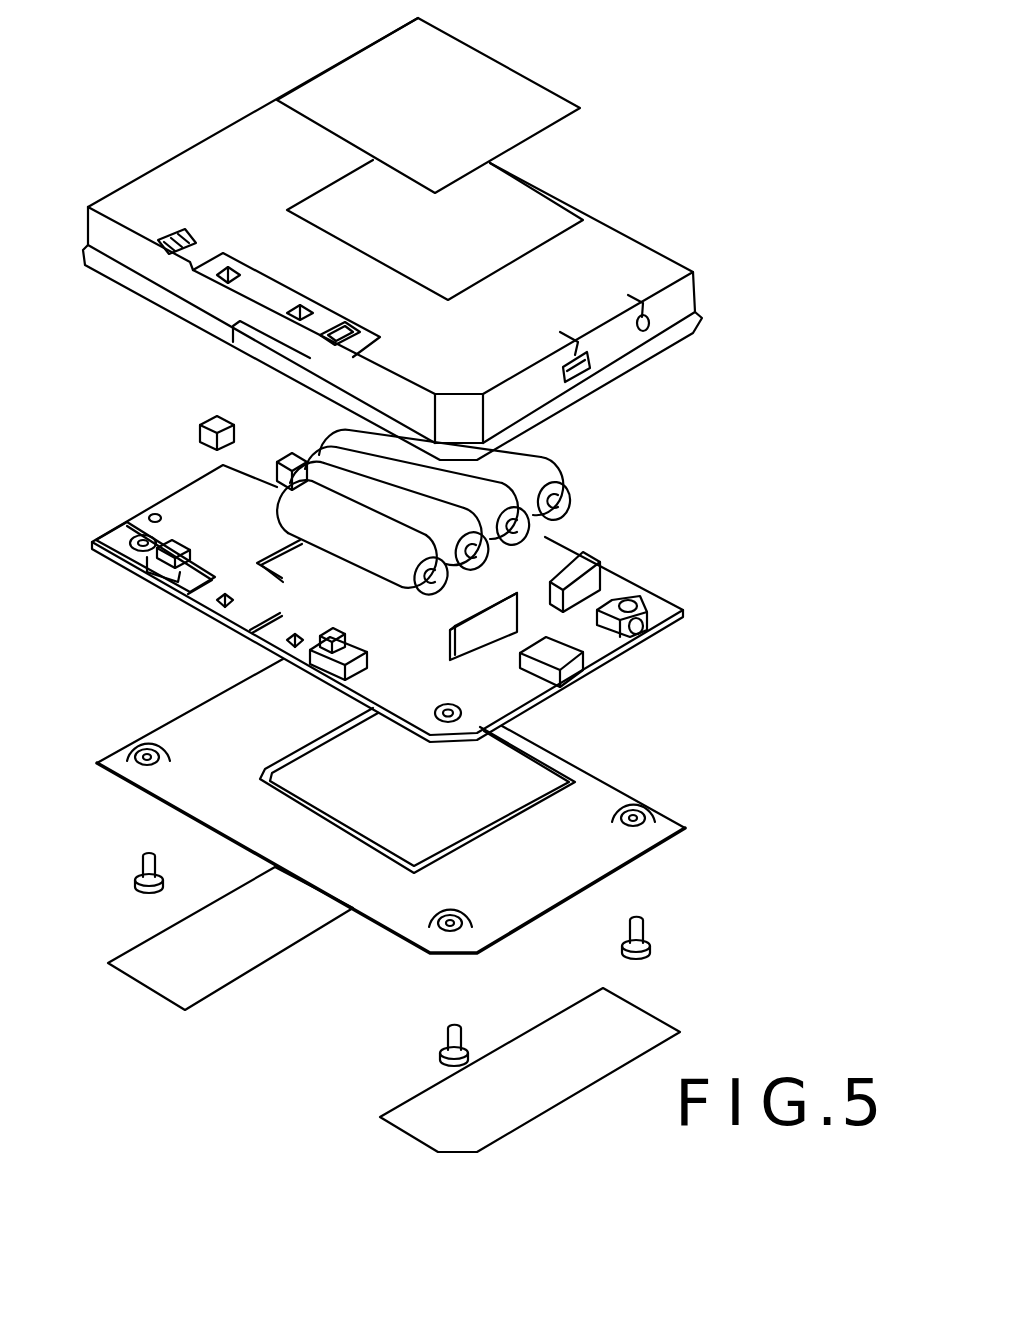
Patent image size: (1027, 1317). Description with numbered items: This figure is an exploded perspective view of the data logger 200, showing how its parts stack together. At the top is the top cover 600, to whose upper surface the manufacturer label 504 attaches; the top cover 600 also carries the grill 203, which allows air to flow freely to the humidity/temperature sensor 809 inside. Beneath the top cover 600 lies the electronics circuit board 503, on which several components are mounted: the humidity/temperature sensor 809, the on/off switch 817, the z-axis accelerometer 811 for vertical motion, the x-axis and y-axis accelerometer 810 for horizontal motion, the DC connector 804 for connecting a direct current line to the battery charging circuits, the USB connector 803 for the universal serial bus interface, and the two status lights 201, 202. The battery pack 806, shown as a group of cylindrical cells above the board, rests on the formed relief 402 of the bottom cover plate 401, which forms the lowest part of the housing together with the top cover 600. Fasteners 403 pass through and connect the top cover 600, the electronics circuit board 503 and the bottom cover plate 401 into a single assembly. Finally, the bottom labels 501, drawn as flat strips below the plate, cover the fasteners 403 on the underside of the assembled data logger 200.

The top cover 600 is at (262, 132).
The manufacturer label 504 is at (540, 92).
The grill 203 is at (170, 230).
The data logger 200 is at (727, 162).
The electronics circuit board 503 is at (207, 500).
The status light 201 is at (207, 420).
The status light 202 is at (290, 452).
The humidity/temperature sensor 809 is at (140, 518).
The battery pack 806 is at (545, 470).
The z-axis accelerometer 811 is at (510, 590).
The x-axis and y-axis accelerometer 810 is at (597, 573).
The DC connector 804 is at (640, 607).
The USB connector 803 is at (572, 670).
The on/off switch 817 is at (293, 658).
The bottom cover plate 401 is at (177, 727).
The formed relief 402 is at (512, 788).
The fasteners 403 is at (133, 872).
The bottom labels 501 is at (167, 982).